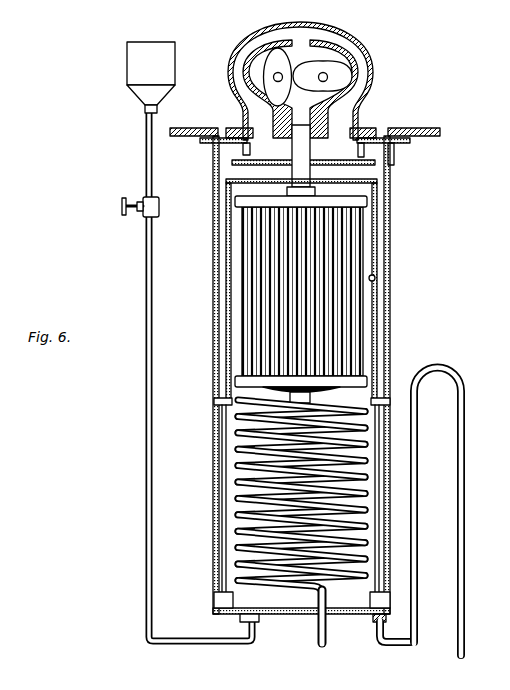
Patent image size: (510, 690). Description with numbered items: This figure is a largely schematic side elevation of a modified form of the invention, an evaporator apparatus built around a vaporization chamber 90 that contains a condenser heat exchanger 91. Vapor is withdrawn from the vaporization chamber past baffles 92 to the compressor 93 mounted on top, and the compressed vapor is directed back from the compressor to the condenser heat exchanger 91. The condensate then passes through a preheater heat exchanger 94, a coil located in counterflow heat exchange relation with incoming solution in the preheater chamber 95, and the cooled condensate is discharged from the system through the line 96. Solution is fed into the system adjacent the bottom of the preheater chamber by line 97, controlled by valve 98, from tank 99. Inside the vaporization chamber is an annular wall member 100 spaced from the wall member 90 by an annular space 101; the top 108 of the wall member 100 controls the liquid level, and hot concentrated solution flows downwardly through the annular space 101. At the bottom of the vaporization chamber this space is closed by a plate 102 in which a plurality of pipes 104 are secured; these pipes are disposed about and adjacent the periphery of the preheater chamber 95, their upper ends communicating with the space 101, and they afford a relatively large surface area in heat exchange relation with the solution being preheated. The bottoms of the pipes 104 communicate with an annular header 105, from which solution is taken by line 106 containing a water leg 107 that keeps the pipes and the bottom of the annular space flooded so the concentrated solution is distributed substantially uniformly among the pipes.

The vaporization chamber 90 is at (217, 322).
The condenser heat exchanger 91 is at (332, 237).
The baffles 92 is at (362, 151).
The compressor 93 is at (367, 40).
The preheater heat exchanger 94 is at (240, 437).
The preheater chamber 95 is at (215, 515).
The line 96 is at (318, 639).
The line 97 is at (146, 567).
The valve 98 is at (160, 204).
The tank 99 is at (135, 66).
The annular wall member 100 is at (375, 277).
The annular space 101 is at (382, 313).
The plate 102 is at (382, 400).
The pipes 104 is at (382, 525).
The annular header 105 is at (376, 612).
The line 106 is at (402, 646).
The water leg 107 is at (416, 455).
The top of the wall member 108 is at (363, 181).